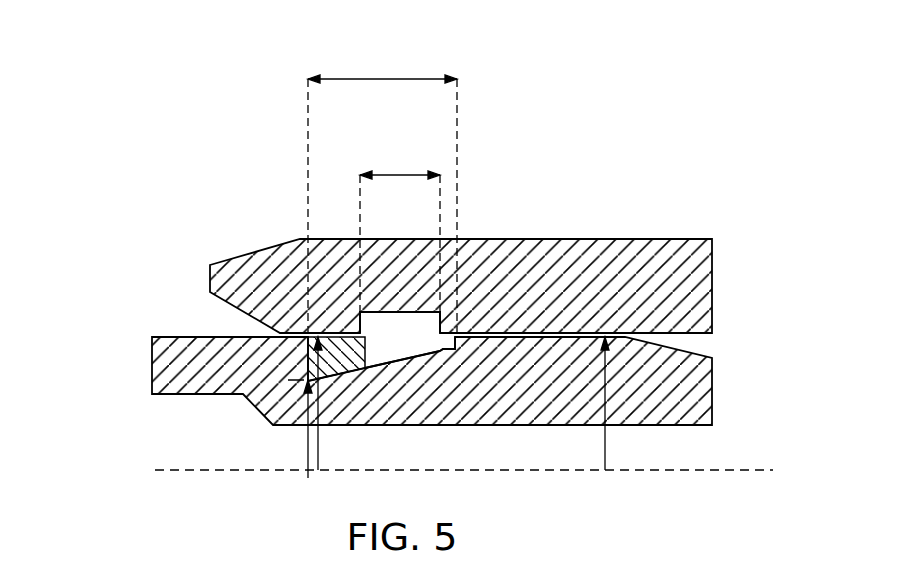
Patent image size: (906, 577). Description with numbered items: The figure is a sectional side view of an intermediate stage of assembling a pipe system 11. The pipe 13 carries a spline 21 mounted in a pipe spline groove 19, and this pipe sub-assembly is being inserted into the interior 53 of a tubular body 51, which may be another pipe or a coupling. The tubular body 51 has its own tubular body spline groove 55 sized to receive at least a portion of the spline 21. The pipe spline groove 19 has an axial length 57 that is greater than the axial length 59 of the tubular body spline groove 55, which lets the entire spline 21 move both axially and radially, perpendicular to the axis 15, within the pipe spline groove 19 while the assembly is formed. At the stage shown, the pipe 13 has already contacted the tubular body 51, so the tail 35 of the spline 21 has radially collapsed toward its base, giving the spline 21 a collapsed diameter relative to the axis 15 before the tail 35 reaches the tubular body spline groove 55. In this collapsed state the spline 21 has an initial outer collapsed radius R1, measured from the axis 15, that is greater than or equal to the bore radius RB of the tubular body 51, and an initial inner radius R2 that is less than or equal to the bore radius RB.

The pipe system 11 is at (189, 149).
The pipe 13 is at (126, 367).
The axis 15 is at (730, 470).
The pipe spline groove 19 is at (410, 354).
The spline 21 is at (363, 358).
The tail 35 is at (368, 339).
The tubular body 51 is at (662, 257).
The interior 53 is at (510, 338).
The tubular body spline groove 55 is at (388, 329).
The axial length 57 is at (382, 79).
The axial length 59 is at (401, 175).
The outer collapsed radius R1 is at (308, 475).
The inner radius R2 is at (306, 437).
The bore radius RB is at (606, 437).